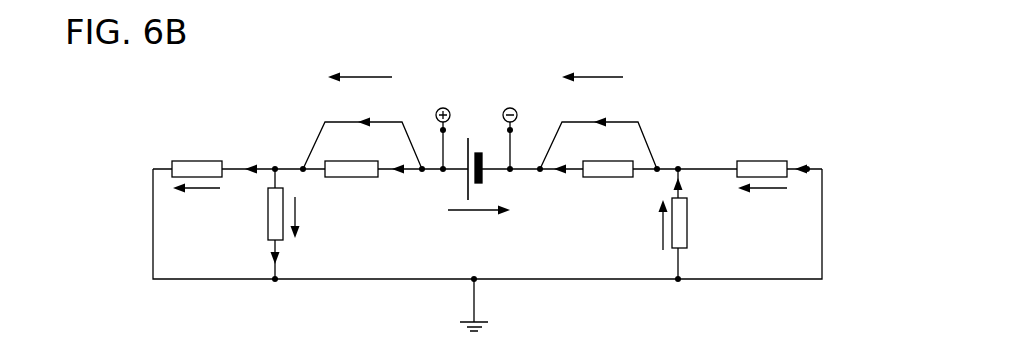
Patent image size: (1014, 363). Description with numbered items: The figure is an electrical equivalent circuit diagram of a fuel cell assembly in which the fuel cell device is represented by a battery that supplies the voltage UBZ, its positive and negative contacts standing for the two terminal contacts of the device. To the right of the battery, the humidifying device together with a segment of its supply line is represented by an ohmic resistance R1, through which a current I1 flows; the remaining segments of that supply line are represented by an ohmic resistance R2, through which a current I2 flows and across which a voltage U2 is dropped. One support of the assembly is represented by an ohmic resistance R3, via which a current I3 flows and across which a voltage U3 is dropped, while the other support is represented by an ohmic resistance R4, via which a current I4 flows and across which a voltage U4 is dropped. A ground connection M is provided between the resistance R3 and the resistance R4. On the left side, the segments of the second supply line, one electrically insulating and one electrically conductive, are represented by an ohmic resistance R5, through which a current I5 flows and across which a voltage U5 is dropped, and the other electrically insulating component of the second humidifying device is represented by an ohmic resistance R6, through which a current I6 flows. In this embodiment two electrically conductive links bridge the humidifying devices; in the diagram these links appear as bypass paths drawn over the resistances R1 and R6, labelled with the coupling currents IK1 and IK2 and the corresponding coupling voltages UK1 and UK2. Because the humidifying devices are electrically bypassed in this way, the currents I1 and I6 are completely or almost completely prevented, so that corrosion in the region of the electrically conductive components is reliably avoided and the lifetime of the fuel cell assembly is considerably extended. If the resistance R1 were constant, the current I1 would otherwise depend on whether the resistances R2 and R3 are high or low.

The ohmic resistance R1 is at (608, 151).
The ohmic resistance R2 is at (762, 151).
The ohmic resistance R3 is at (695, 227).
The ohmic resistance R4 is at (261, 215).
The ohmic resistance R5 is at (197, 152).
The ohmic resistance R6 is at (351, 152).
The current I1 is at (560, 186).
The current I2 is at (801, 152).
The current I3 is at (690, 192).
The current I4 is at (287, 258).
The current I5 is at (252, 152).
The current I6 is at (400, 186).
The voltage U2 is at (762, 207).
The voltage U3 is at (652, 226).
The voltage U4 is at (308, 217).
The voltage U5 is at (196, 206).
The coupling voltage UK1 is at (592, 61).
The coupling voltage UK2 is at (360, 61).
The coupling current IK1 is at (598, 123).
The coupling current IK2 is at (362, 124).
The voltage UBZ is at (479, 193).
The ground connection M is at (483, 321).